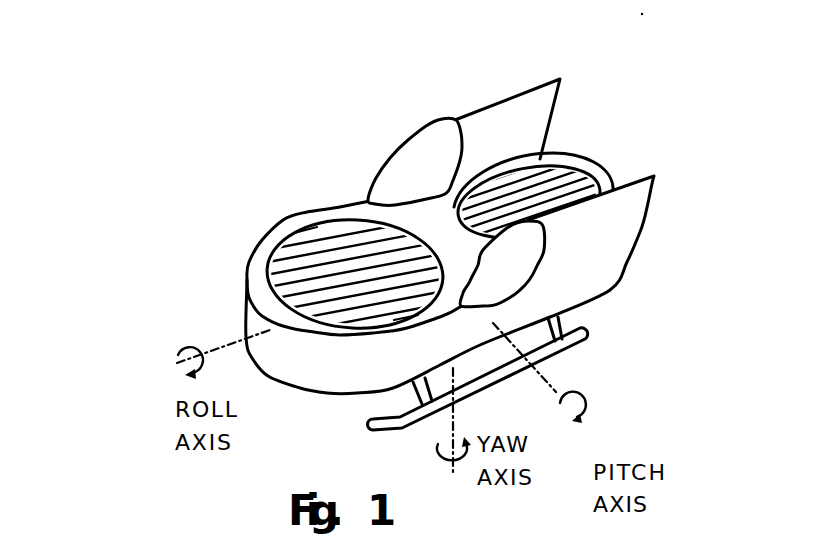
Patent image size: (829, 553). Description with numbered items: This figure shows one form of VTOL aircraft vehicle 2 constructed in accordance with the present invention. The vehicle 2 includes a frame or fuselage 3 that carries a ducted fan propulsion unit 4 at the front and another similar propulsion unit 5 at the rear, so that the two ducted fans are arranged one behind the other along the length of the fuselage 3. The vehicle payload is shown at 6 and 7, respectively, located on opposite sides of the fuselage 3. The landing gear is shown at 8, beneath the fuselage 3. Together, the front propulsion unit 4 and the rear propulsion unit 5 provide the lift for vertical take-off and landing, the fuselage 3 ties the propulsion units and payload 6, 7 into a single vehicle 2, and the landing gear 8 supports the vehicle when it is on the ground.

The vehicle 2 is at (282, 219).
The frame or fuselage 3 is at (600, 266).
The ducted fan propulsion unit 4 is at (325, 232).
The propulsion unit 5 is at (577, 173).
The vehicle payload 6 is at (456, 118).
The vehicle payload 7 is at (513, 237).
The landing gear 8 is at (583, 335).